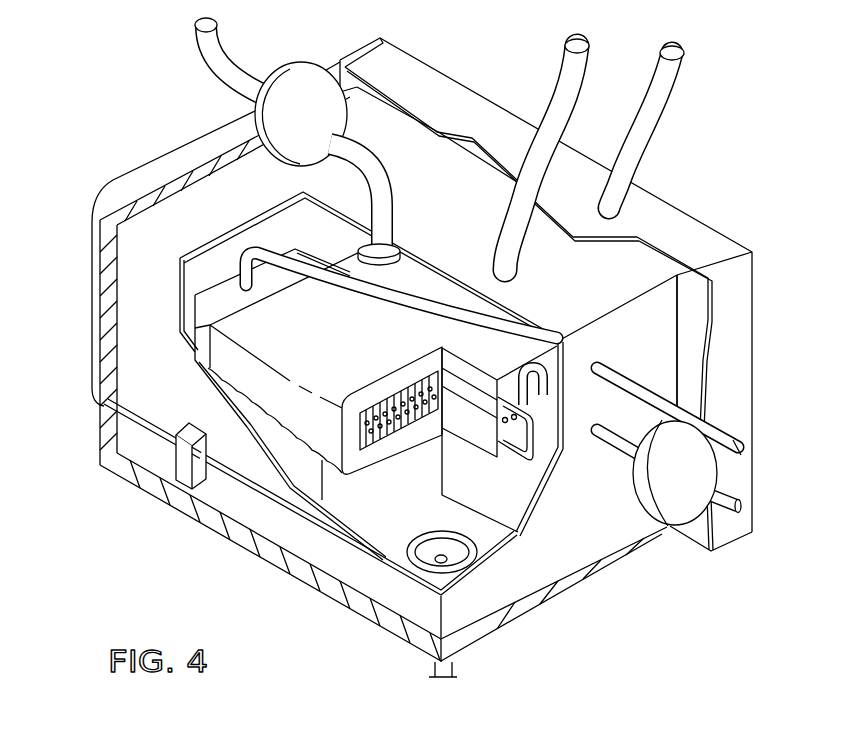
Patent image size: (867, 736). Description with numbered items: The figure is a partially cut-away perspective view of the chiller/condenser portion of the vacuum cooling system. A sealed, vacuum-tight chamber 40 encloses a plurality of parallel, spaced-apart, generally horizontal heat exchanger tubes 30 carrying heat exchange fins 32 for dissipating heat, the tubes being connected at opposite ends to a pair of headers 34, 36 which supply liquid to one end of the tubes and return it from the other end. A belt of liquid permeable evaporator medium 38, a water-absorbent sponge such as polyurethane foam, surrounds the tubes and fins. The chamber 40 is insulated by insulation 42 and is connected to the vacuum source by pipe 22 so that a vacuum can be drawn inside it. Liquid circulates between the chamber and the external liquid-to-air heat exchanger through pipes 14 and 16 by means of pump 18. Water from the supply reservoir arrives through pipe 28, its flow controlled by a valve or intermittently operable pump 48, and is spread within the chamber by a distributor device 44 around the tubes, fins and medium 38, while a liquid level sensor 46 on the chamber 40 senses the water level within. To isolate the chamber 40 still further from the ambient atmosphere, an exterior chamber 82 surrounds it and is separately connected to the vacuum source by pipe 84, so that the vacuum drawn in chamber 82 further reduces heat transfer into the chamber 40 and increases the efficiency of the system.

The pipe 14 is at (640, 378).
The pipe 16 is at (603, 452).
The pump 18 is at (670, 528).
The pipe 22 is at (548, 100).
The pipe 28 is at (395, 186).
The heat exchanger tubes 30 is at (443, 430).
The heat exchange fins 32 is at (400, 440).
The header 34 is at (540, 473).
The header 36 is at (227, 295).
The evaporator medium 38 is at (358, 342).
The sealed chamber 40 is at (228, 452).
The insulation 42 is at (140, 200).
The distributor device 44 is at (397, 248).
The liquid level sensor 46 is at (180, 467).
The valve or control 48 is at (280, 127).
The exterior chamber 82 is at (461, 103).
The pipe 84 is at (637, 100).